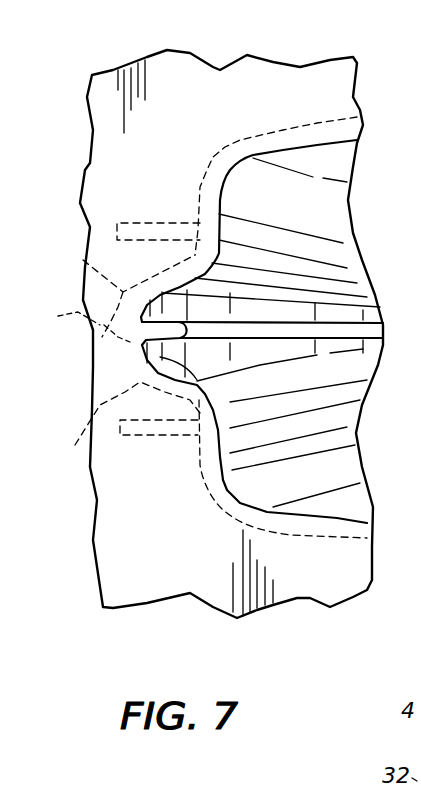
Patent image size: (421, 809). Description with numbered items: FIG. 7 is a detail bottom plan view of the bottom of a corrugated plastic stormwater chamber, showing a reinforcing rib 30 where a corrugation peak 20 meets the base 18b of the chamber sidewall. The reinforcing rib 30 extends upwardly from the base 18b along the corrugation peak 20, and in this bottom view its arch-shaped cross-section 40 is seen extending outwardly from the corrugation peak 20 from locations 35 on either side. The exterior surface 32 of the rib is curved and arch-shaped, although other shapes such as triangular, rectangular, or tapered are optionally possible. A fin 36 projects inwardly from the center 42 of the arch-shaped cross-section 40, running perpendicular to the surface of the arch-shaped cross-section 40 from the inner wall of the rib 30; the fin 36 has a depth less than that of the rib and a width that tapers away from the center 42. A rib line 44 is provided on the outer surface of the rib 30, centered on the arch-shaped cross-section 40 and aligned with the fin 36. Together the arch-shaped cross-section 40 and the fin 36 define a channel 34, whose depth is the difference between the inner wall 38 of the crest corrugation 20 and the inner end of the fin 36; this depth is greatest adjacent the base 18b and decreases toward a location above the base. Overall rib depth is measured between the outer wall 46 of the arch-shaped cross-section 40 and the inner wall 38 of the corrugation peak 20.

The corrugation peak 20 is at (326, 143).
The base 18b is at (158, 588).
The inner wall 38 is at (225, 190).
The locations 35 is at (203, 268).
The fin 36 is at (307, 332).
The outer wall 46 is at (83, 260).
The rib line 44 is at (64, 321).
The arch-shaped cross-section 40 is at (133, 345).
The reinforcing rib 30 is at (136, 353).
The center 42 is at (140, 363).
The exterior surface 32 is at (122, 427).
The channel 34 is at (207, 363).